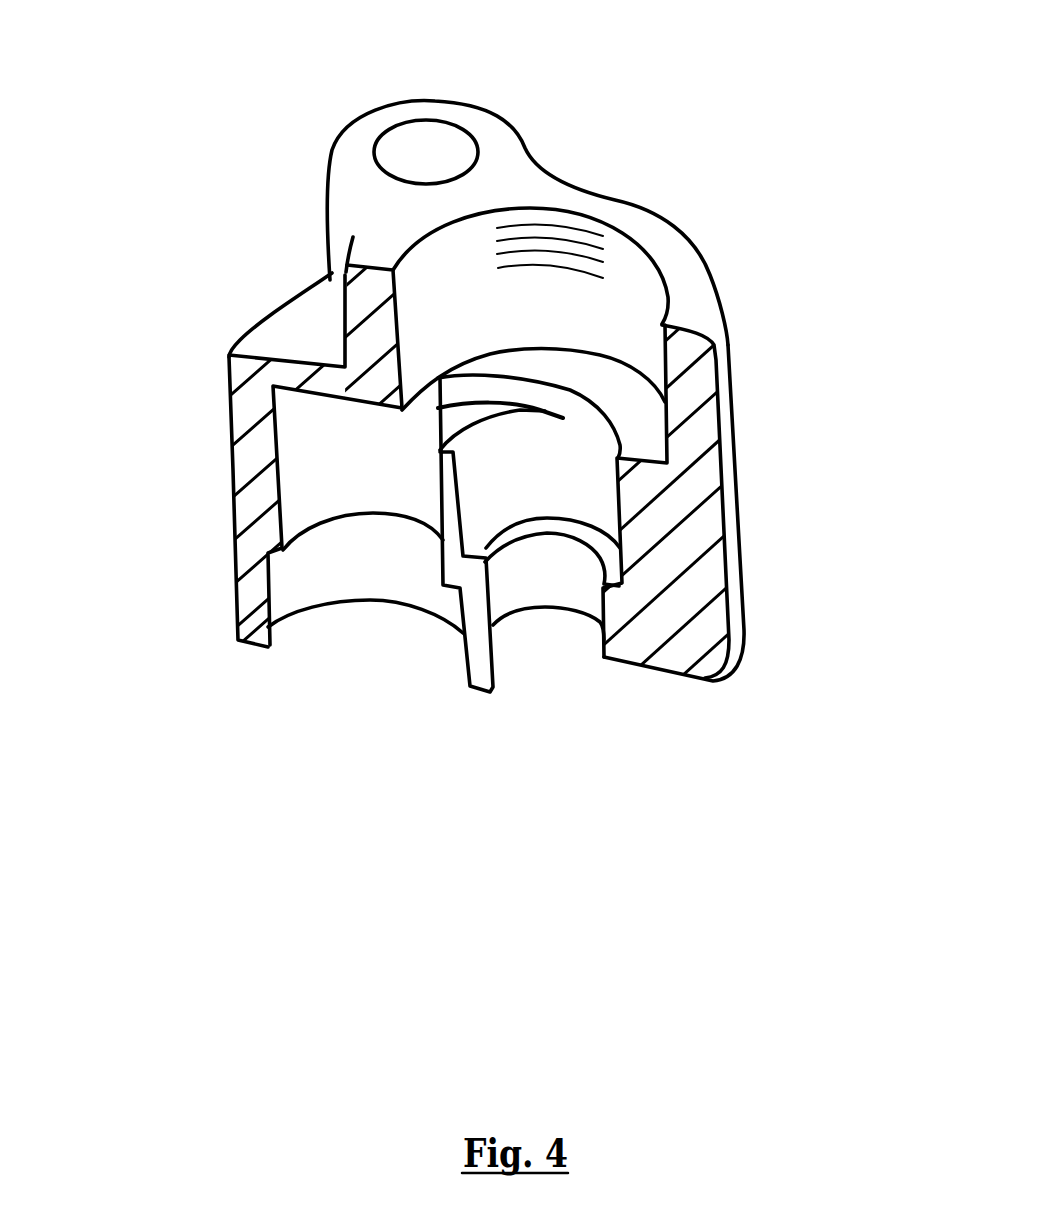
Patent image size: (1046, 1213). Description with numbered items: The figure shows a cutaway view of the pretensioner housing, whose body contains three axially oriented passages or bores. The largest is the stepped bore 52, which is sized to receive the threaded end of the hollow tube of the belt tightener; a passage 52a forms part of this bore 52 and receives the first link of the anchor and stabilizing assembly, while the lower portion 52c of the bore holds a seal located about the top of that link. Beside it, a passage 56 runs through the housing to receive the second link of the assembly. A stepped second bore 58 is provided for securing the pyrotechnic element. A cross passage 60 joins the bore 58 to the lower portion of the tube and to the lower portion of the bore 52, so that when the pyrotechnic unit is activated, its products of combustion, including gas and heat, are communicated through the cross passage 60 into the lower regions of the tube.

The stepped bore 52 is at (665, 340).
The passage 52a is at (662, 402).
The lower portion of bore 52c is at (603, 596).
The passage 56 is at (460, 130).
The stepped second bore 58 is at (288, 463).
The cross passage 60 is at (447, 396).